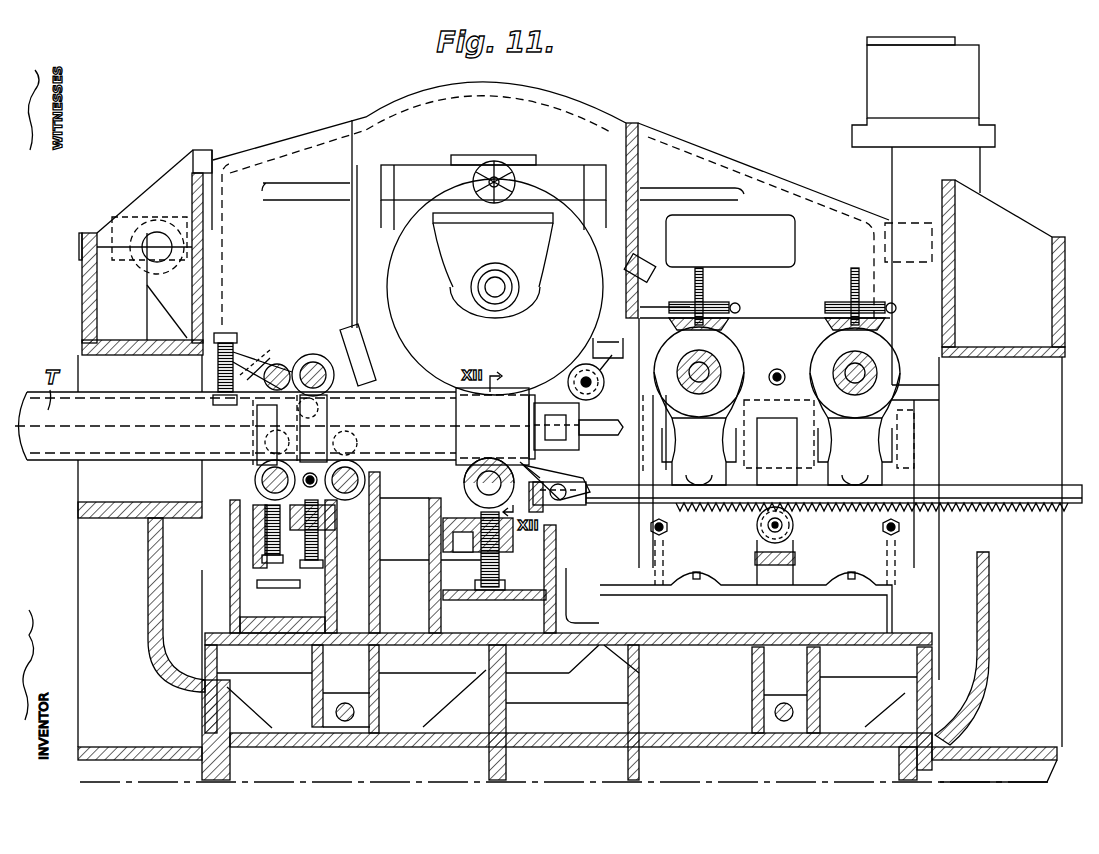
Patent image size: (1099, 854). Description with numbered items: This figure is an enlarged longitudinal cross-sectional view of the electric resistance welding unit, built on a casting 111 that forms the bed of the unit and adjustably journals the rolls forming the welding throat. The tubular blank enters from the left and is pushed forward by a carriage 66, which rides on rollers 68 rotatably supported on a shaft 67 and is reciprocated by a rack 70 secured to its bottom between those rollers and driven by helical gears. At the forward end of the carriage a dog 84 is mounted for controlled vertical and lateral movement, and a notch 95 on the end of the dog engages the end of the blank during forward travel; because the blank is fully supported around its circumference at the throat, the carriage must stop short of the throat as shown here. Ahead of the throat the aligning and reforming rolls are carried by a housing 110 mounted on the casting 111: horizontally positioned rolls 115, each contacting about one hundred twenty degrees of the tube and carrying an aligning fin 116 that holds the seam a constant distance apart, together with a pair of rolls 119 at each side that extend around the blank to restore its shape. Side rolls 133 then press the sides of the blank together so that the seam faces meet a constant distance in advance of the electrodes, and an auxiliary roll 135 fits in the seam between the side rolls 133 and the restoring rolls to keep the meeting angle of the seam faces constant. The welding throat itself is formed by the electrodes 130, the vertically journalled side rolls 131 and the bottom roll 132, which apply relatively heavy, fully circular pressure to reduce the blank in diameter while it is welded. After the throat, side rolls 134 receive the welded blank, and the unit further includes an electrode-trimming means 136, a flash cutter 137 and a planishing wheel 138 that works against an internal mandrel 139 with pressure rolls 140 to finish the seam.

The carriage 66 is at (993, 490).
The shaft 67 is at (780, 530).
The rollers 68 is at (792, 524).
The rack 70 is at (1008, 510).
The dog 84 is at (548, 476).
The notch 95 is at (535, 474).
The housing 110 is at (893, 618).
The casting 111 is at (562, 740).
The horizontally positioned rolls 115 is at (825, 353).
The aligning fin 116 is at (812, 364).
The rolls 119 is at (776, 443).
The electrodes 130 is at (410, 258).
The side rolls 131 is at (518, 392).
The bottom roll 132 is at (468, 484).
The side rolls 133 is at (545, 408).
The side rolls 134 is at (442, 395).
The auxiliary roll 135 is at (585, 372).
The electrode-trimming means 136 is at (630, 268).
The flash cutter 137 is at (374, 376).
The planishing wheel 138 is at (318, 356).
The internal mandrel 139 is at (255, 424).
The pressure rolls 140 is at (256, 483).